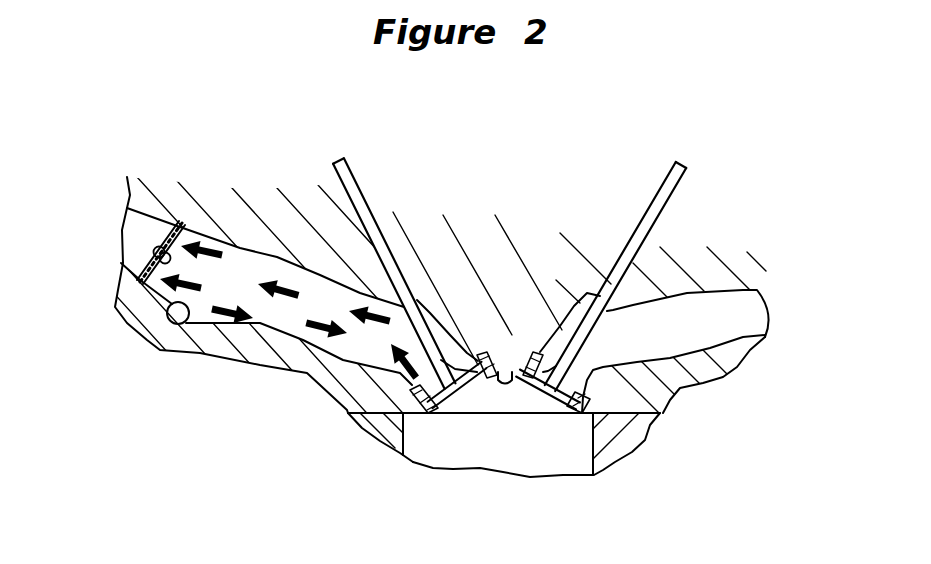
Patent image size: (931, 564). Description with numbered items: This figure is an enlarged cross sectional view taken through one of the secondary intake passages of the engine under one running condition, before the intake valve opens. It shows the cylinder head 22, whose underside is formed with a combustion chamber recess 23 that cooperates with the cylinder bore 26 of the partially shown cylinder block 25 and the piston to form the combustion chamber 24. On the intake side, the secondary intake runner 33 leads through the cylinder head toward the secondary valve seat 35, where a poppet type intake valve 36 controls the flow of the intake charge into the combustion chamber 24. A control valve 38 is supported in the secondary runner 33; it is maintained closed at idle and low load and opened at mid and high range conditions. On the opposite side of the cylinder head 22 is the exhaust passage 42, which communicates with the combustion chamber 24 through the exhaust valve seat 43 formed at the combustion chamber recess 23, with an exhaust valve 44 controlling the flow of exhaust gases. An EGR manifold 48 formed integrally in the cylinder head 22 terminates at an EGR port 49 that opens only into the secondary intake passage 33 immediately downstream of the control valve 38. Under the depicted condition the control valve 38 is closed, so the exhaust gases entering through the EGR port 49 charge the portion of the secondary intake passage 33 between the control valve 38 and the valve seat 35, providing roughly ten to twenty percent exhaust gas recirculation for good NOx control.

The cylinder head 22 is at (718, 365).
The combustion chamber recess 23 is at (510, 372).
The combustion chamber 24 is at (512, 398).
The cylinder block 25 is at (383, 431).
The cylinder bore 26 is at (587, 452).
The secondary intake runner 33 is at (290, 334).
The secondary valve seat 35 is at (441, 414).
The intake valve 36 is at (376, 220).
The control valve 38 is at (118, 268).
The exhaust passage 42 is at (771, 314).
The exhaust valve seat 43 is at (550, 414).
The exhaust valve 44 is at (669, 198).
The EGR manifold 48 is at (176, 328).
The EGR port 49 is at (213, 308).